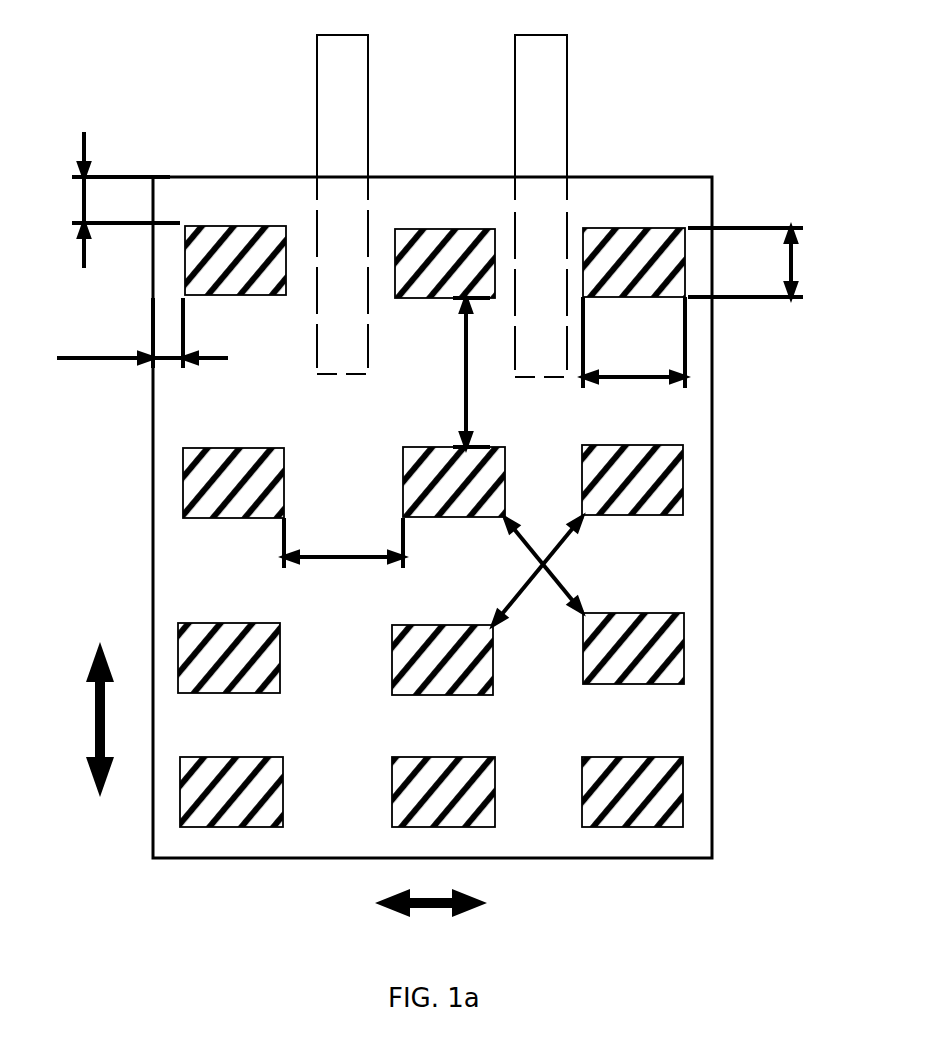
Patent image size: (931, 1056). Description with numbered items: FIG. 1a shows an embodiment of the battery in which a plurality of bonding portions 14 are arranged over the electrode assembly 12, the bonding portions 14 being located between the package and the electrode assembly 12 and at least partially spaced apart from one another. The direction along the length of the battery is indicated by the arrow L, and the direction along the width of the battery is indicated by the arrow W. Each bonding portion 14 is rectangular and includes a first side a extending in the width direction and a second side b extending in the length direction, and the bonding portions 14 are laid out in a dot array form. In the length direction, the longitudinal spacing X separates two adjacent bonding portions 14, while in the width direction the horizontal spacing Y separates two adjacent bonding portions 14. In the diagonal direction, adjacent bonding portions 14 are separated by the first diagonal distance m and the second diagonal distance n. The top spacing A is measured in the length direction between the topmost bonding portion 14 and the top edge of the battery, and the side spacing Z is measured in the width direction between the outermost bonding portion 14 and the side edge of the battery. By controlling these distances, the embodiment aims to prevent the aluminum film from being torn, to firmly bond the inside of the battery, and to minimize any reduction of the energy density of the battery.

The electrode assembly 12 is at (637, 176).
The bonding portion 14 is at (657, 615).
The top spacing A is at (105, 200).
The side spacing Z is at (142, 333).
The first side a is at (634, 342).
The second side b is at (745, 262).
The longitudinal spacing X is at (449, 372).
The horizontal spacing Y is at (343, 535).
The first diagonal distance m is at (557, 565).
The second diagonal distance n is at (527, 571).
The arrow W is at (79, 719).
The arrow L is at (447, 910).